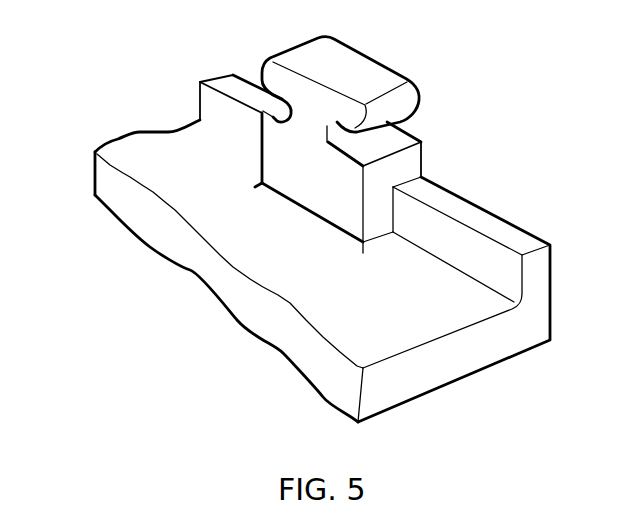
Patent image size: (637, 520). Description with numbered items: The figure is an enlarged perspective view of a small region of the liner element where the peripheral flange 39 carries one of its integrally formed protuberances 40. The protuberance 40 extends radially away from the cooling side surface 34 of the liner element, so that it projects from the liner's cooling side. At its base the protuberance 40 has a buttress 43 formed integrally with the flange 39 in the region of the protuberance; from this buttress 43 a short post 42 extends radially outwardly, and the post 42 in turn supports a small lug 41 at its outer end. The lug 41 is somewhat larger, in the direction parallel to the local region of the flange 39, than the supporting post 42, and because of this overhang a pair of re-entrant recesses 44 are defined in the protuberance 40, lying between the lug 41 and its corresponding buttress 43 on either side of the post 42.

The cooling side surface 34 is at (132, 153).
The peripheral flange 39 is at (515, 239).
The protuberance 40 is at (322, 135).
The lug 41 is at (340, 112).
The post 42 is at (312, 123).
The buttress 43 is at (413, 168).
The re-entrant recess 44 is at (271, 100).